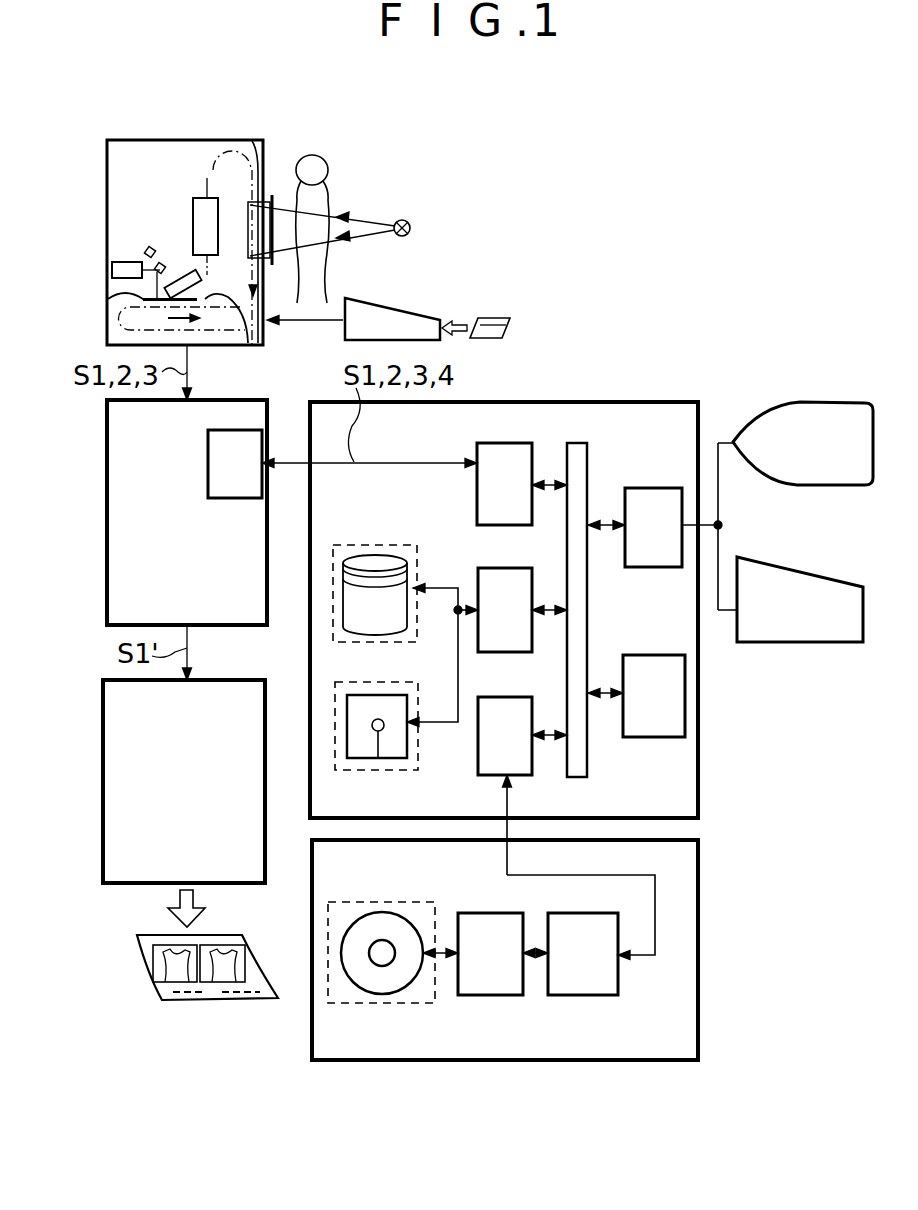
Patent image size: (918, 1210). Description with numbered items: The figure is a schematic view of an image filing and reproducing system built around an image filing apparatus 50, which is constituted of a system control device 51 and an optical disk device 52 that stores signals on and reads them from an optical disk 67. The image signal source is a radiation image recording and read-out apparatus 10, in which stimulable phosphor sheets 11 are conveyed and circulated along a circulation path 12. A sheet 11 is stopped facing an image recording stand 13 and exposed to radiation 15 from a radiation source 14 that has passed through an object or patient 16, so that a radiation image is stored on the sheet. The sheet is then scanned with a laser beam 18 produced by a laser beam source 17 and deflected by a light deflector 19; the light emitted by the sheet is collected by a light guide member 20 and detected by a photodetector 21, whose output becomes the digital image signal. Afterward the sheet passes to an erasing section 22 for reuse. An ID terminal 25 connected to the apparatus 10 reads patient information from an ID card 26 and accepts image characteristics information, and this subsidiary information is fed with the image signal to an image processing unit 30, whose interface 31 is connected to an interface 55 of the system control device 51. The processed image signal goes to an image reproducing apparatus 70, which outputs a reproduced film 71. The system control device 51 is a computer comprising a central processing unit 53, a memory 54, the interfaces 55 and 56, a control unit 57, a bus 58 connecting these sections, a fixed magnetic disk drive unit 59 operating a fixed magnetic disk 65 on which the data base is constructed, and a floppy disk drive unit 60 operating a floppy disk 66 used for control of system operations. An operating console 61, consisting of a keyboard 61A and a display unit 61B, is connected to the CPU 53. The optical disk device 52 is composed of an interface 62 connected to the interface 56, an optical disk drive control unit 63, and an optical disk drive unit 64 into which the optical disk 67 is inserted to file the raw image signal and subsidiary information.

The radiation image recording and read-out apparatus 10 is at (211, 126).
The stimulable phosphor sheet 11 is at (250, 140).
The circulation path 12 is at (207, 185).
The image recording stand 13 is at (278, 205).
The radiation source 14 is at (410, 223).
The radiation 15 is at (356, 221).
The object (patient) 16 is at (325, 190).
The laser beam source 17 is at (113, 262).
The laser beam 18 is at (142, 297).
The light deflector 19 is at (150, 254).
The light guide member 20 is at (190, 274).
The photodetector 21 is at (254, 346).
The erasing section 22 is at (193, 205).
The ID terminal 25 is at (418, 307).
The ID card 26 is at (503, 318).
The image processing unit 30 is at (98, 511).
The interface of image processing unit 31 is at (208, 466).
The image filing apparatus 50 is at (641, 379).
The system control device 51 is at (702, 753).
The optical disk device 52 is at (700, 983).
The central processing unit (CPU) 53 is at (650, 488).
The memory 54 is at (661, 645).
The interface 55 is at (491, 443).
The interface 56 is at (532, 767).
The control unit 57 is at (507, 652).
The bus 58 is at (589, 458).
The fixed magnetic disk drive unit 59 is at (365, 545).
The floppy disk drive unit 60 is at (390, 773).
The operating console 61 is at (812, 522).
The keyboard 61A is at (778, 535).
The display unit 61B is at (782, 473).
The interface 62 is at (590, 997).
The optical disk drive control unit 63 is at (497, 995).
The optical disk drive unit 64 is at (407, 902).
The fixed magnetic disk 65 is at (388, 613).
The floppy disk 66 is at (362, 740).
The optical disk 67 is at (379, 912).
The image reproducing apparatus 70 is at (98, 753).
The reproduced image film 71 is at (147, 983).